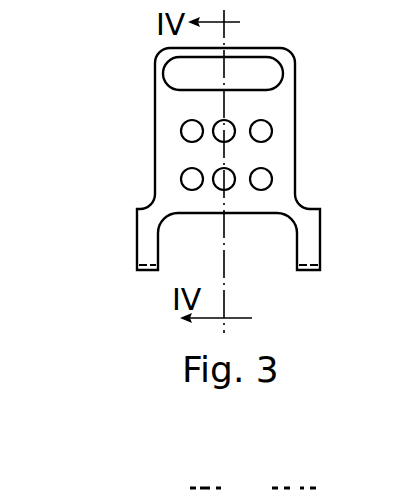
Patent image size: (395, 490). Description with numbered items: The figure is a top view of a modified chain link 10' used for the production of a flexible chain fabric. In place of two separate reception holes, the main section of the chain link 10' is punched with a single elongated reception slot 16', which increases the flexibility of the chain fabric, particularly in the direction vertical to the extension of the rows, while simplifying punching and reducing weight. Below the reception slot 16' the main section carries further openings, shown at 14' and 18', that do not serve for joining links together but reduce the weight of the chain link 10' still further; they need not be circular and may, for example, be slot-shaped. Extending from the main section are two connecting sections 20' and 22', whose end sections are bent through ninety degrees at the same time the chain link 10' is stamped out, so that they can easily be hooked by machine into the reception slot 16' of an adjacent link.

The chain link 10' is at (274, 108).
The holes 14' is at (165, 155).
The reception slot 16' is at (170, 73).
The additional openings 18' is at (303, 160).
The connecting section 20' is at (119, 232).
The connecting section 22' is at (325, 232).